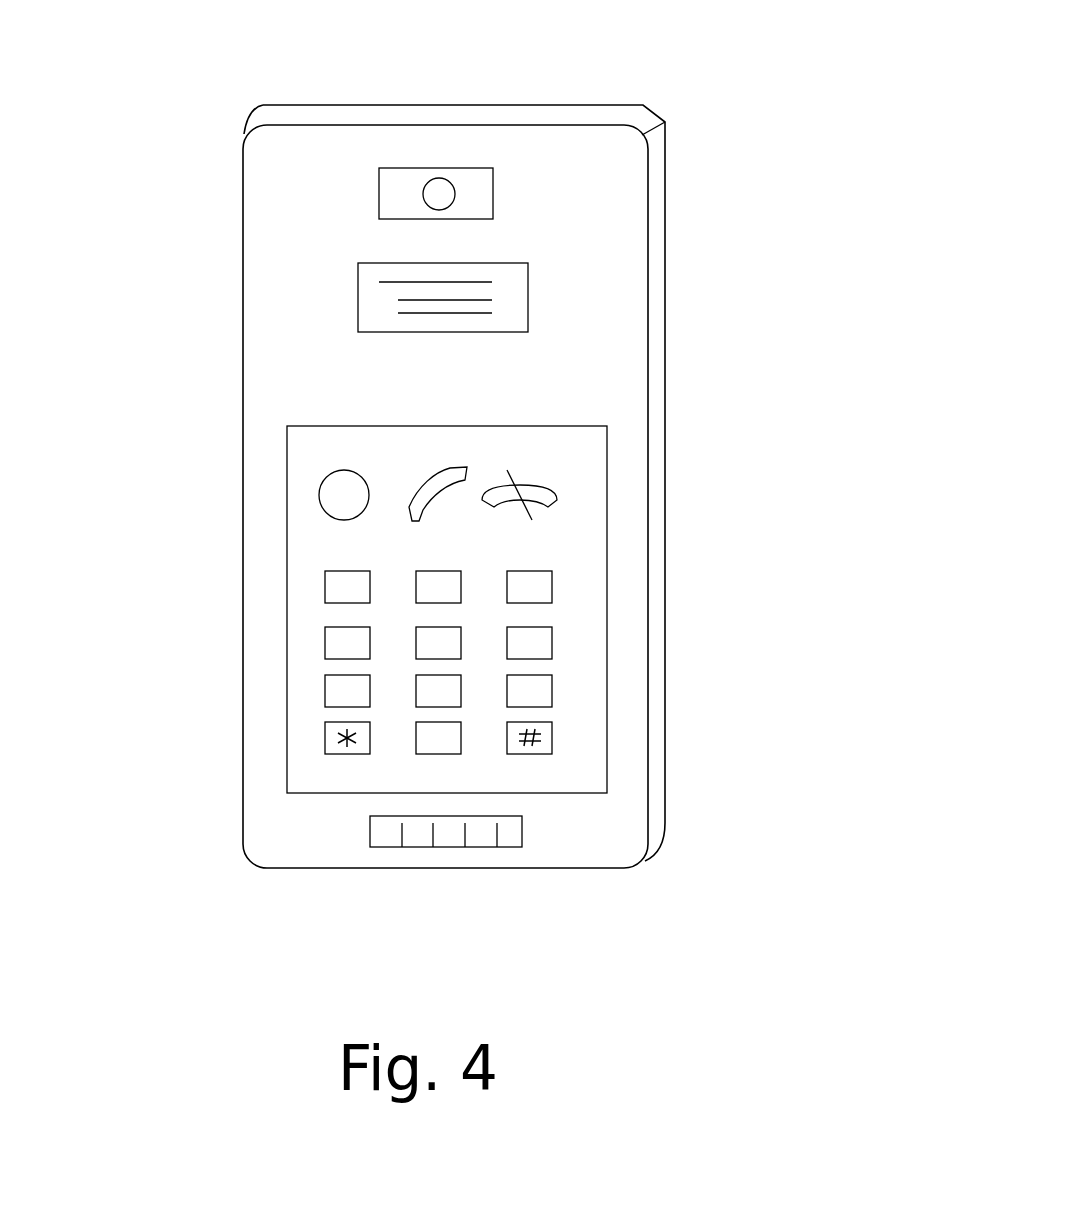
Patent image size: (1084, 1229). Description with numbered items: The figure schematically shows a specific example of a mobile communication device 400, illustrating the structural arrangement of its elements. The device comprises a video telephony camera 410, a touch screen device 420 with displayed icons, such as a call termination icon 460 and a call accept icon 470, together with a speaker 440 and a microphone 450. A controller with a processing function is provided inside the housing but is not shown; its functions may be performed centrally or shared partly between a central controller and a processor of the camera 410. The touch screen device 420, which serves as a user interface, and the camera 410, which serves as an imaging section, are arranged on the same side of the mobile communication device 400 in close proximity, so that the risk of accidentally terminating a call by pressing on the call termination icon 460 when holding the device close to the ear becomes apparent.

The mobile communication device 400 is at (542, 80).
The video telephony camera 410 is at (379, 190).
The speaker 440 is at (528, 292).
The touch screen device 420 is at (607, 643).
The call termination icon 460 is at (557, 487).
The call accept icon 470 is at (403, 508).
The microphone 450 is at (467, 847).